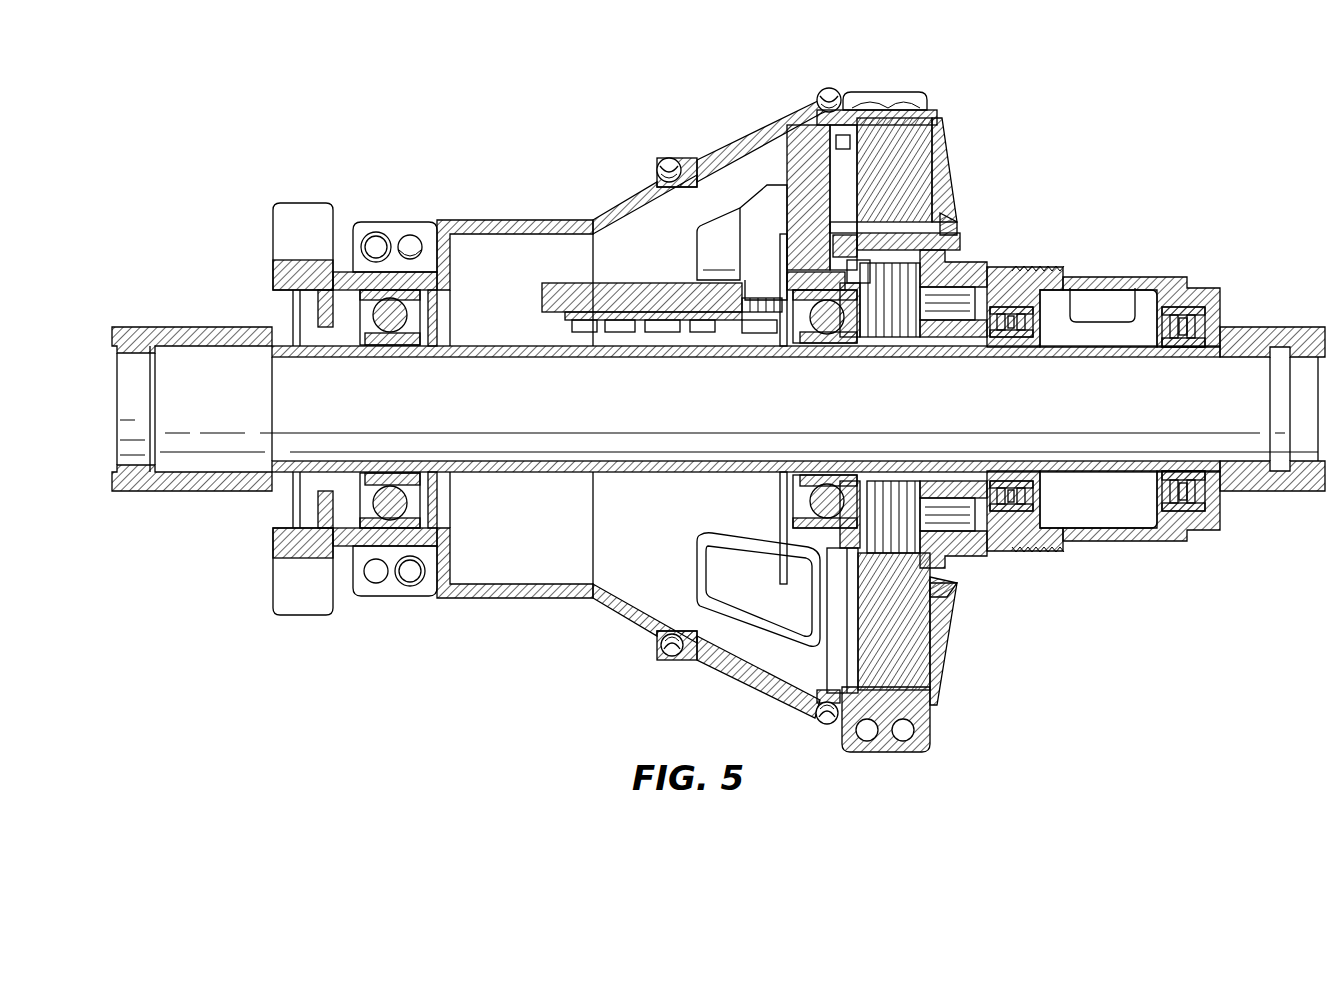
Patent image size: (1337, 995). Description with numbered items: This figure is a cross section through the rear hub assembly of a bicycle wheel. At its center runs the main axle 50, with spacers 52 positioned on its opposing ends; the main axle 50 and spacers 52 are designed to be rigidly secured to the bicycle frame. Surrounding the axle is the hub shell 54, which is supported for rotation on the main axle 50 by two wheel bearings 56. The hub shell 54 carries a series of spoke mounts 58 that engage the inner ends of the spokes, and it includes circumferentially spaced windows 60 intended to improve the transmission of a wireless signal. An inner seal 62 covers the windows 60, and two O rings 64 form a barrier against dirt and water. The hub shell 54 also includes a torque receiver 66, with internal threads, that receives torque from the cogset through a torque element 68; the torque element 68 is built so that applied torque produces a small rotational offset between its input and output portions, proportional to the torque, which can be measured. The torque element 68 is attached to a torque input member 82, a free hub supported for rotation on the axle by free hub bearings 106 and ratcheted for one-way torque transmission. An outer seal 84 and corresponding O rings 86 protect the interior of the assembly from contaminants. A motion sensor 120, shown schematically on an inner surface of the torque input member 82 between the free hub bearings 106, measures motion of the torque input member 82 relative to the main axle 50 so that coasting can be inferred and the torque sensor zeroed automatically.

The main axle 50 is at (718, 409).
The spacers 52 is at (268, 326).
The hub shell 54 is at (520, 221).
The wheel bearings 56 is at (400, 300).
The spoke mounts 58 is at (376, 238).
The windows 60 is at (720, 240).
The inner seal 62 is at (762, 128).
The O rings 64 is at (662, 160).
The torque receiver 66 is at (882, 100).
The torque element 68 is at (915, 150).
The torque input member 82 is at (1130, 406).
The outer seal 84 is at (955, 188).
The O rings 86 is at (952, 228).
The free hub bearings 106 is at (1186, 306).
The motion sensor 120 is at (1112, 306).